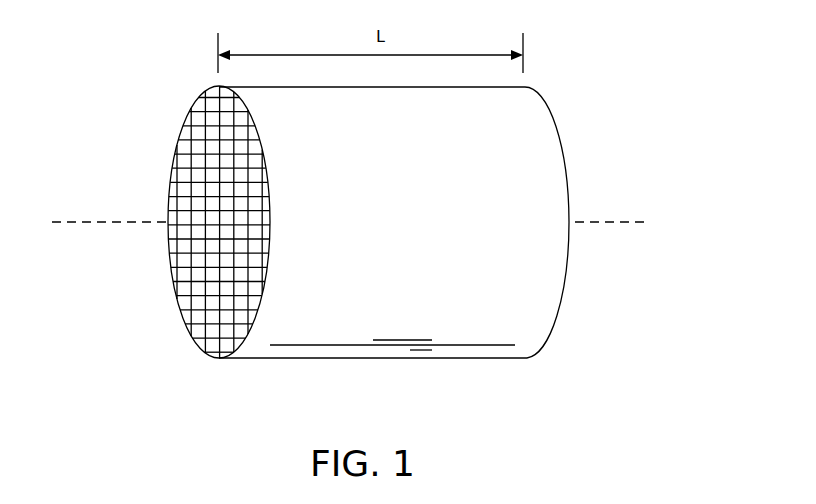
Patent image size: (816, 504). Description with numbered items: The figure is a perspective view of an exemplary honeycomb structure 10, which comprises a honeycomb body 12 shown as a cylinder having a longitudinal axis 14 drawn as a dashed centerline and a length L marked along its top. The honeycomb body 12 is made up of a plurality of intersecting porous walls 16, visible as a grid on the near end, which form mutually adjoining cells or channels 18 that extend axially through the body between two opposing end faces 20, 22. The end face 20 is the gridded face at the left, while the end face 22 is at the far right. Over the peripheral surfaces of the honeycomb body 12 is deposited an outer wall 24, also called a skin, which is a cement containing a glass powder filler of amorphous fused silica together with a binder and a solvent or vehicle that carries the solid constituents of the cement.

The honeycomb structure 10 is at (650, 73).
The honeycomb body 12 is at (266, 362).
The longitudinal axis 14 is at (118, 221).
The porous walls 16 is at (192, 114).
The cells or channels 18 is at (180, 138).
The end face 20 is at (172, 299).
The end face 22 is at (573, 268).
The outer wall 24 is at (545, 175).